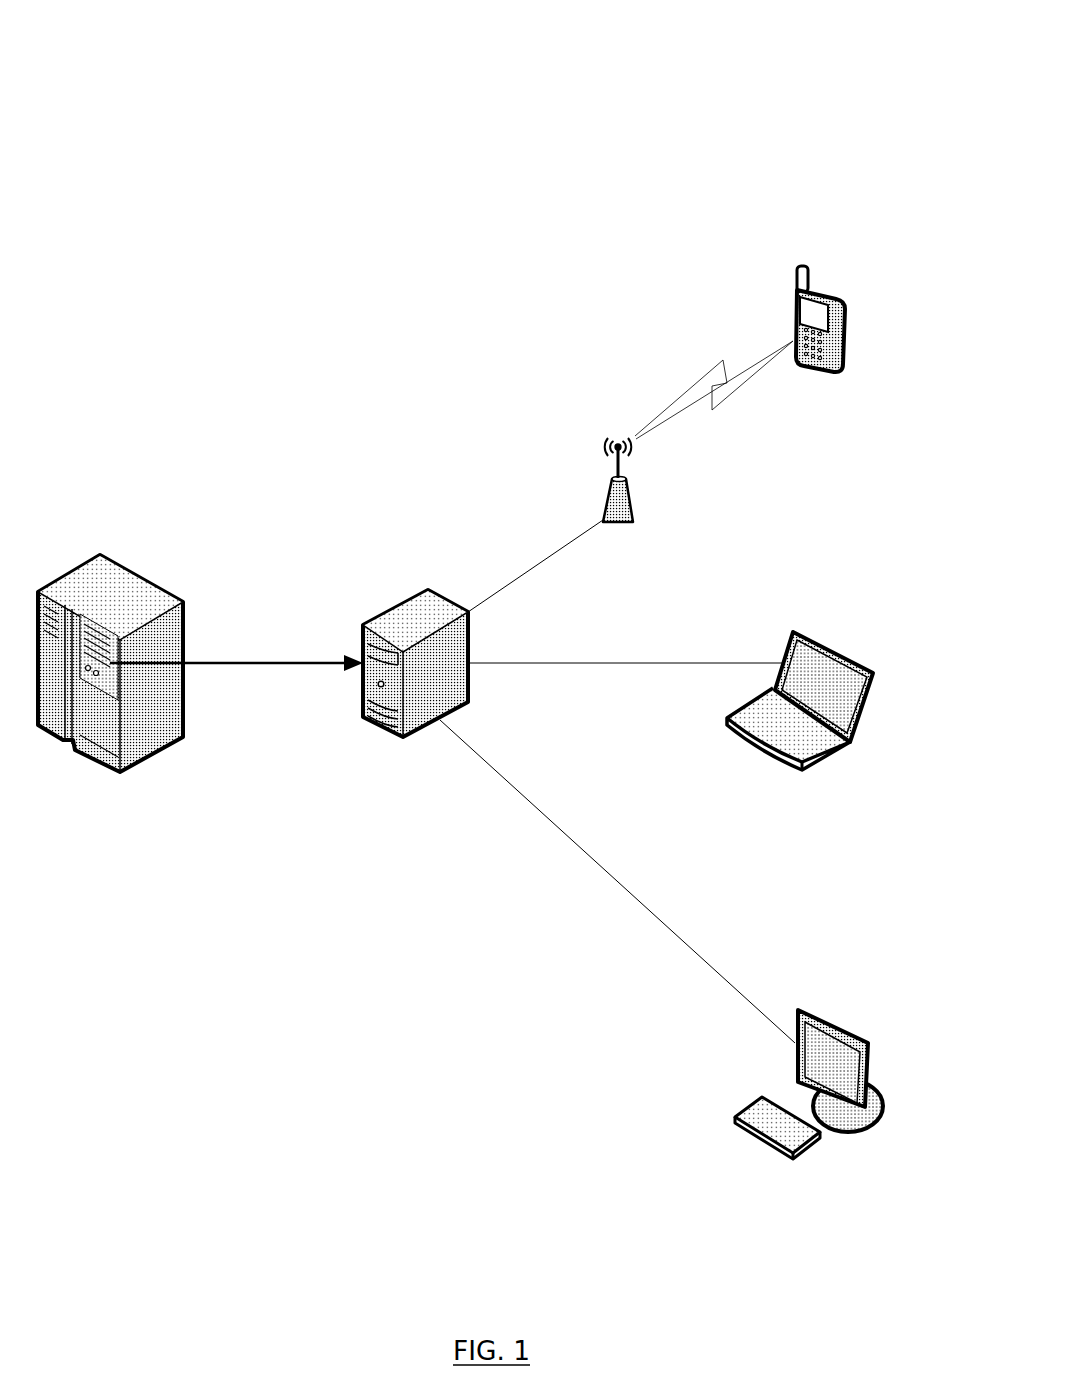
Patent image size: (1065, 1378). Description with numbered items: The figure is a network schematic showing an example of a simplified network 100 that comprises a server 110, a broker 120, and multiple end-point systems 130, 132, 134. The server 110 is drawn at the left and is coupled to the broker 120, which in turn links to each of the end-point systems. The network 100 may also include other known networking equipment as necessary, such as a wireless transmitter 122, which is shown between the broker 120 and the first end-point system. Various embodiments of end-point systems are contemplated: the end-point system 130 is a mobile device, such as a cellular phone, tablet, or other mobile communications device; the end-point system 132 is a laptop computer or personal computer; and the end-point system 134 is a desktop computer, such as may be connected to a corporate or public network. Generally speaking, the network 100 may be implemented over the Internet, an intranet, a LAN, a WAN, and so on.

The network 100 is at (172, 79).
The server 110 is at (104, 639).
The broker 120 is at (395, 635).
The wireless transmitter 122 is at (587, 465).
The end-point system 130 is at (869, 285).
The end-point system 132 is at (833, 670).
The end-point system 134 is at (838, 1059).